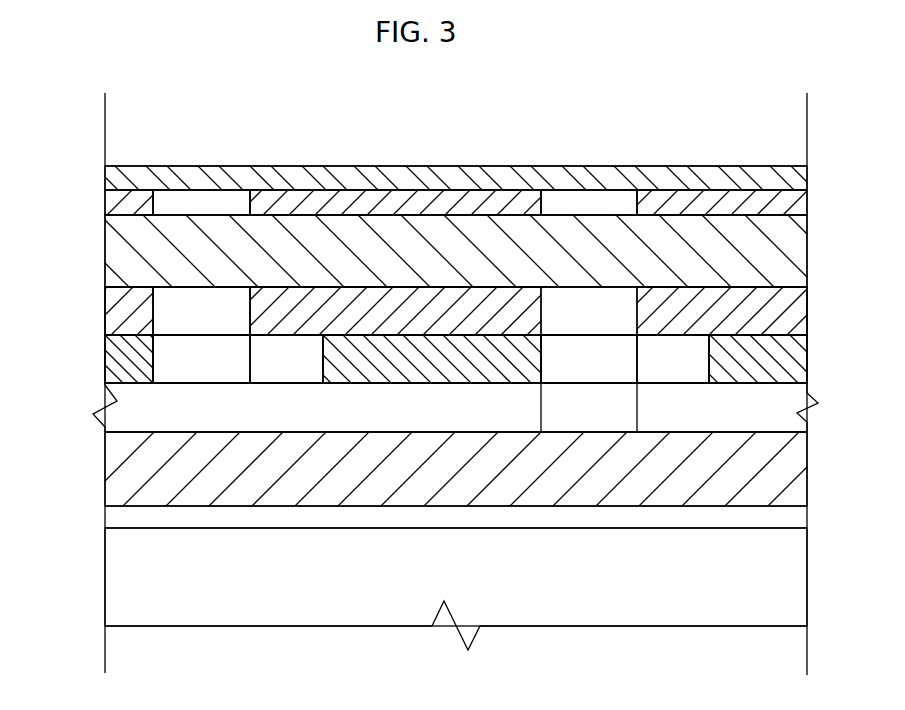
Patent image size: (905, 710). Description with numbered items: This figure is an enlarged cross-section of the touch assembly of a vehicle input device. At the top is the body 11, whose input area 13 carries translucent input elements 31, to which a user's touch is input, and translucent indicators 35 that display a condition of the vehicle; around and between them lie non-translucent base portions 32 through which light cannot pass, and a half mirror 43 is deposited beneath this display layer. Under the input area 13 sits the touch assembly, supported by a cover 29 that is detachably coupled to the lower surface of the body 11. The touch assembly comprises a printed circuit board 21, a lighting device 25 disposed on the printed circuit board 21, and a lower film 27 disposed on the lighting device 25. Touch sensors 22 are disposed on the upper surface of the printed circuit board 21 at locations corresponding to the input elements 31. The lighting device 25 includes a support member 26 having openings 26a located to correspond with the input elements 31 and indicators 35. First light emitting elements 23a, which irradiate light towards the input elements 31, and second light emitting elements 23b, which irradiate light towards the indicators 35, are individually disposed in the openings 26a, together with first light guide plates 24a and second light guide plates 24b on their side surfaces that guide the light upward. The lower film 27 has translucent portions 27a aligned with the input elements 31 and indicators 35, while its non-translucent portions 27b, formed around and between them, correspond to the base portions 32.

The body 11 is at (435, 251).
The input area 13 is at (128, 252).
The printed circuit board 21 is at (128, 467).
The touch sensors 22 is at (570, 412).
The first light emitting elements 23a is at (672, 348).
The second light emitting elements 23b is at (270, 374).
The first light guide plates 24a is at (557, 376).
The second light guide plates 24b is at (200, 374).
The lighting device 25 is at (96, 359).
The support member 26 is at (795, 358).
The openings 26a is at (153, 374).
The lower film 27 is at (96, 311).
The translucent portions 27a is at (173, 307).
The non-translucent portions 27b is at (283, 313).
The cover 29 is at (703, 572).
The input elements 31 is at (606, 204).
The base portions 32 is at (470, 201).
The indicators 35 is at (222, 205).
The half mirror 43 is at (373, 181).